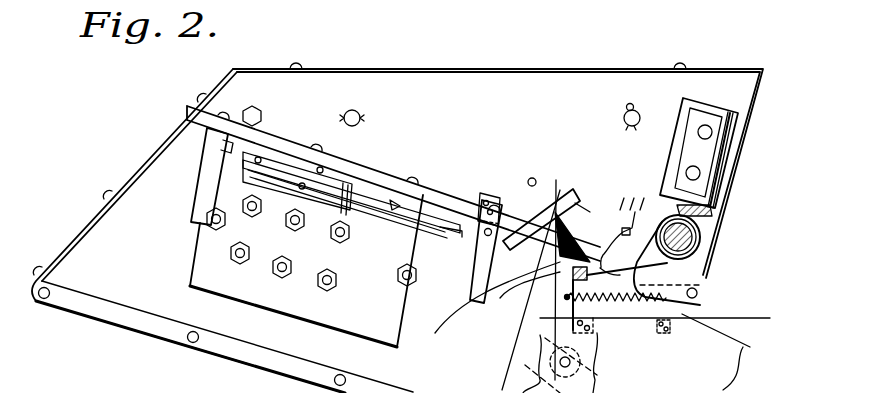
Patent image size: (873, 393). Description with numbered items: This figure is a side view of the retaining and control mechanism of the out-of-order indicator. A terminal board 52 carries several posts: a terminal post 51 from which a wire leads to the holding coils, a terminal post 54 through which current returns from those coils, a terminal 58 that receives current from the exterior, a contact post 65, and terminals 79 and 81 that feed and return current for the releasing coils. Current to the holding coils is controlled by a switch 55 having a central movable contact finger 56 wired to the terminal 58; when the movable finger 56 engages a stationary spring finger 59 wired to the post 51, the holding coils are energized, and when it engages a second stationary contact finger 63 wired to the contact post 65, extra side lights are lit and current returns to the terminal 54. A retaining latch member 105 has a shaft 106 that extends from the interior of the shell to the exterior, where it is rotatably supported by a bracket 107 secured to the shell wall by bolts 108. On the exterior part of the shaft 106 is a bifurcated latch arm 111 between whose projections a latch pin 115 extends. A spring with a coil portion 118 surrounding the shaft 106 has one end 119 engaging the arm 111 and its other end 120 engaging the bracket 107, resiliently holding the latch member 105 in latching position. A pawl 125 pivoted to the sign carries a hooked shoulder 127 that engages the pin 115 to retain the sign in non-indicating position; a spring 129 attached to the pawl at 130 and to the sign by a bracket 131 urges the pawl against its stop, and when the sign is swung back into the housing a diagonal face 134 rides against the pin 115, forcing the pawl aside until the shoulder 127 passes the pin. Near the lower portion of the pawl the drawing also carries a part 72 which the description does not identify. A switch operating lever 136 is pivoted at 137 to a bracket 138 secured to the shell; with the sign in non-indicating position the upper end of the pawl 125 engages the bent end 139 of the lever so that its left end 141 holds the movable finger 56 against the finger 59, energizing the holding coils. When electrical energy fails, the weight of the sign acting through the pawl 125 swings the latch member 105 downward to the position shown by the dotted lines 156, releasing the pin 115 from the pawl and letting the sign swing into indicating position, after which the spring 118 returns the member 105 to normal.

The terminal post 51 is at (243, 198).
The terminal board 52 is at (372, 322).
The terminal post 54 is at (285, 222).
The switch 55 is at (395, 176).
The movable contact finger 56 is at (483, 195).
The terminal 58 is at (320, 281).
The stationary spring finger 59 is at (380, 205).
The second stationary contact finger 63 is at (372, 200).
The contact post 65 is at (342, 240).
The shaft 72 is at (588, 370).
The terminal 79 is at (275, 268).
The terminal 81 is at (232, 253).
The retaining latch member 105 is at (500, 287).
The shaft 106 is at (712, 268).
The bracket 107 is at (713, 160).
The bolts 108 is at (693, 172).
The latch arm 111 is at (632, 204).
The latch pin 115 is at (493, 315).
The coil portion of spring 118 is at (671, 311).
The spring end 119 is at (750, 347).
The spring end 120 is at (740, 195).
The pawl 125 is at (517, 350).
The hooked shoulder 127 is at (572, 262).
The spring 129 is at (628, 333).
The spring attachment point on pawl 130 is at (500, 298).
The bracket 131 is at (678, 315).
The diagonal face 134 is at (633, 215).
The switch operating lever 136 is at (535, 207).
The pivot 137 is at (480, 280).
The bracket 138 is at (520, 183).
The bent end of lever 139 is at (572, 190).
The left end of lever 141 is at (455, 228).
The dotted-line position of latch member 156 is at (698, 296).